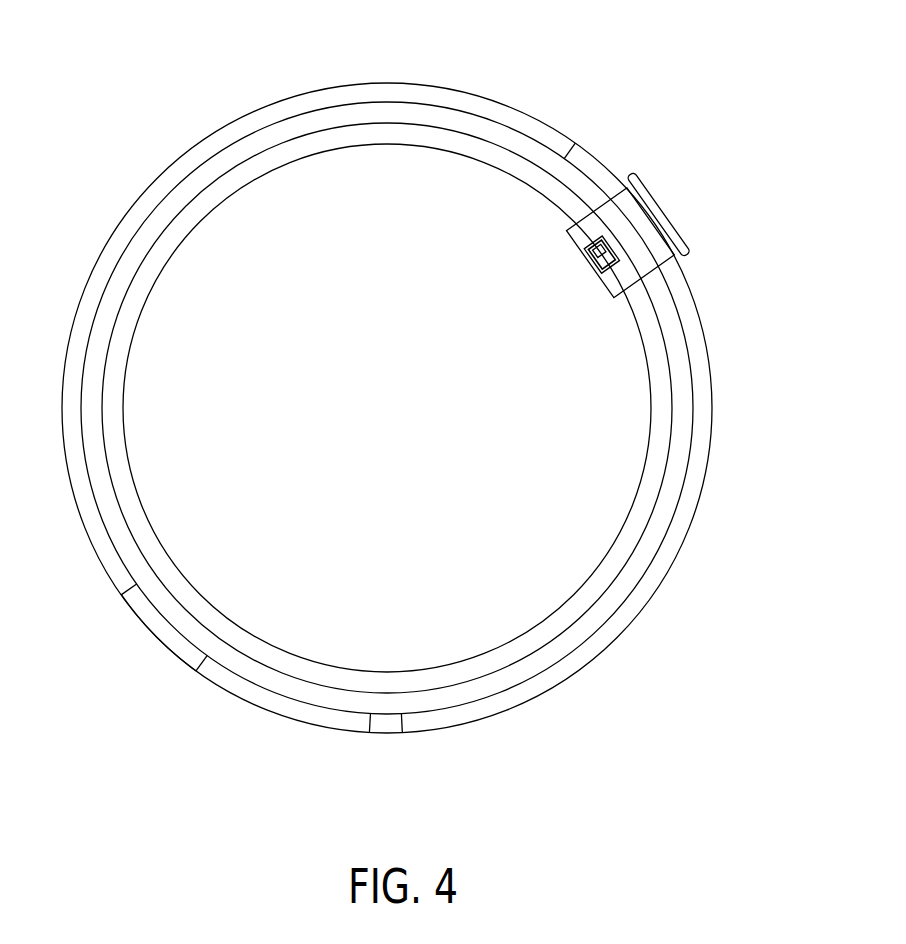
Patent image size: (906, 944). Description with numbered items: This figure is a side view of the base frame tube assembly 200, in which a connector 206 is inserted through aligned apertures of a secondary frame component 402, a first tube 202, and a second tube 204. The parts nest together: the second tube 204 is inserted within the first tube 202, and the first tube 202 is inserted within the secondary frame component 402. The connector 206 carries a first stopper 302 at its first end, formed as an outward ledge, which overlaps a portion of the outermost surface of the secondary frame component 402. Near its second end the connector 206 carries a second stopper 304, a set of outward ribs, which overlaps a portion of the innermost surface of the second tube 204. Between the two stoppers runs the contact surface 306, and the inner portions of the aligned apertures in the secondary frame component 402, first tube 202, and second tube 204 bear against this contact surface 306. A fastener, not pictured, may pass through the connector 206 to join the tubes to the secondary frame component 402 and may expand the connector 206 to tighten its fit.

The base frame tube assembly 200 is at (138, 85).
The first tube 202 is at (132, 250).
The second tube 204 is at (275, 153).
The connector 206 is at (677, 203).
The first stopper 302 is at (688, 258).
The second stopper 304 is at (598, 274).
The contact surface 306 is at (583, 233).
The secondary frame component 402 is at (153, 638).